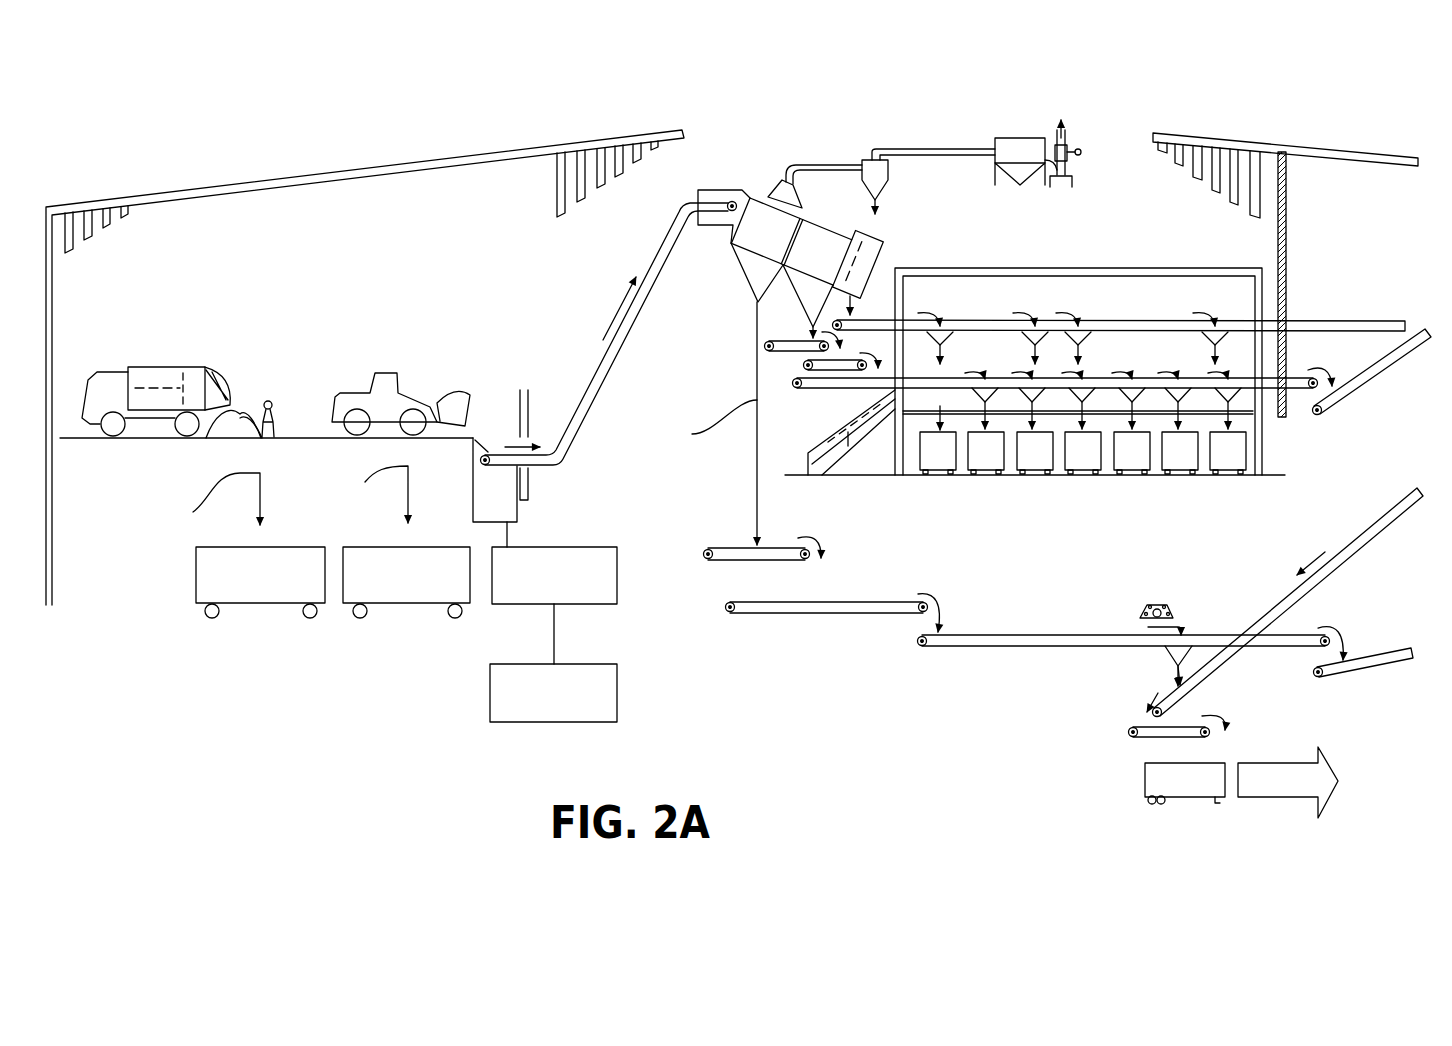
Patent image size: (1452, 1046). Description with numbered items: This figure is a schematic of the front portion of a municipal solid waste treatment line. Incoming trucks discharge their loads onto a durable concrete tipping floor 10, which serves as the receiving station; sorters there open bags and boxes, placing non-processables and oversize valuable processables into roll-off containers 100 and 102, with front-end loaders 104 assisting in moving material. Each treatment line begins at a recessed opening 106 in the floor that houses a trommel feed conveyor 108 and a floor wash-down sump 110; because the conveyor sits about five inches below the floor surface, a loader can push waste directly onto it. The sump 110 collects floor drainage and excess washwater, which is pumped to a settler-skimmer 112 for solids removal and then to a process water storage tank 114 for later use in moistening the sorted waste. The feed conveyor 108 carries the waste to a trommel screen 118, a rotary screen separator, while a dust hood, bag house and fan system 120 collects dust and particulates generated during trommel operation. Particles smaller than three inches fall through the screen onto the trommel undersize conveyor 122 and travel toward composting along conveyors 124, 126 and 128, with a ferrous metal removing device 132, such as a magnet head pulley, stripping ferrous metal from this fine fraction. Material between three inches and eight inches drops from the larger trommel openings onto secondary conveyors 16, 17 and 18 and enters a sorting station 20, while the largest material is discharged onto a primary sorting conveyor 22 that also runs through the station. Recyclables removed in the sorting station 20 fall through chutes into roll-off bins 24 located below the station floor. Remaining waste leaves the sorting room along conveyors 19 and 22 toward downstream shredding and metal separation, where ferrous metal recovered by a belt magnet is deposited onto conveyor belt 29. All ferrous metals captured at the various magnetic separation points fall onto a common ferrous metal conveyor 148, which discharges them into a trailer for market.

The tipping floor 10 is at (130, 440).
The roll-off container 100 is at (282, 588).
The roll-off container 102 is at (428, 588).
The front-end loader 104 is at (355, 393).
The recessed opening 106 is at (499, 422).
The trommel feed conveyor 108 is at (614, 392).
The floor wash-down sump 110 is at (493, 492).
The settler-skimmer 112 is at (617, 560).
The process water storage tank 114 is at (492, 708).
The trommel screen 118 is at (822, 225).
The dust hood, bag house and fan system 120 is at (886, 130).
The secondary conveyor 16 is at (792, 353).
The secondary conveyor 17 is at (853, 360).
The secondary conveyor 18 is at (943, 382).
The conveyor 19 is at (1332, 404).
The sorting station 20 is at (1088, 292).
The primary sorting conveyor 22 is at (1330, 320).
The roll-off bins 24 is at (950, 461).
The conveyor belt 29 is at (1340, 556).
The trommel undersize conveyor 122 is at (735, 552).
The conveyor 124 is at (815, 610).
The conveyor 126 is at (948, 644).
The conveyor 128 is at (1362, 666).
The ferrous metal removing device 132 is at (1157, 604).
The common ferrous metal conveyor 148 is at (1130, 727).